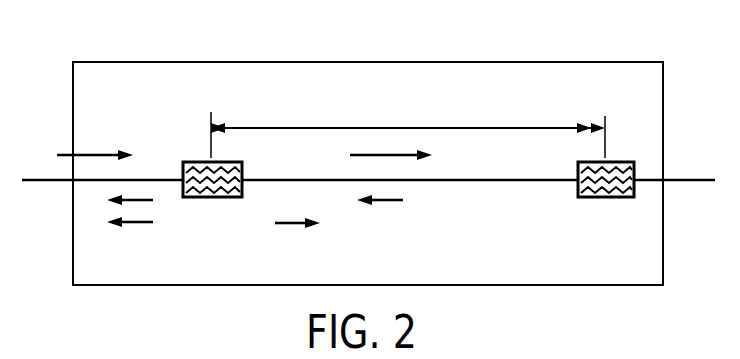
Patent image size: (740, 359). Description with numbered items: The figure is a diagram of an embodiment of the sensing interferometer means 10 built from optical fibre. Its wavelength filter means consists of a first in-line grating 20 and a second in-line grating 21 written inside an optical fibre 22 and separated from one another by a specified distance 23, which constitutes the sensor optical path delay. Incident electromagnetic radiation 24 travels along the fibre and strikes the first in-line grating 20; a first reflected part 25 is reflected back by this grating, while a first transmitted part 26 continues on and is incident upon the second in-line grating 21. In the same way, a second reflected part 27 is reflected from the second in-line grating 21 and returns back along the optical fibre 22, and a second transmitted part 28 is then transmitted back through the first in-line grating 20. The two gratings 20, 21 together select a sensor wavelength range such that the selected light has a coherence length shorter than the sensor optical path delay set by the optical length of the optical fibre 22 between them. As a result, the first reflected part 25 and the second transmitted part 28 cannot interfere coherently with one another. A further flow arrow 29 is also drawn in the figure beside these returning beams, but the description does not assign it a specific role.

The sensing interferometer means 10 is at (329, 62).
The first in-line grating 20 is at (211, 197).
The second in-line grating 21 is at (603, 197).
The optical fibre 22 is at (487, 180).
The specified distance 23 is at (468, 128).
The incident electromagnetic radiation 24 is at (91, 154).
The first reflected part 25 is at (129, 202).
The first transmitted part 26 is at (355, 155).
The second reflected part 27 is at (388, 200).
The second transmitted part 28 is at (135, 222).
The forward flow arrow 29 is at (293, 223).